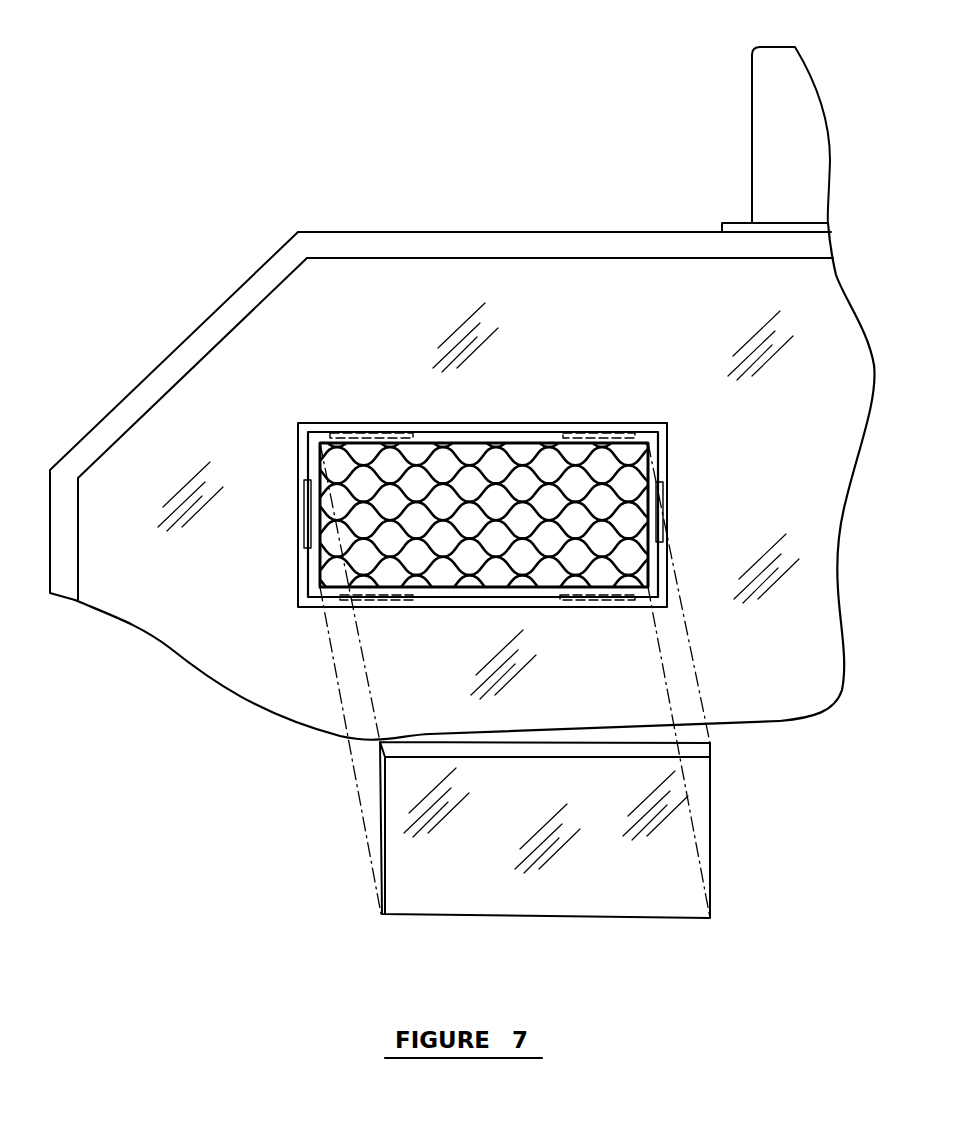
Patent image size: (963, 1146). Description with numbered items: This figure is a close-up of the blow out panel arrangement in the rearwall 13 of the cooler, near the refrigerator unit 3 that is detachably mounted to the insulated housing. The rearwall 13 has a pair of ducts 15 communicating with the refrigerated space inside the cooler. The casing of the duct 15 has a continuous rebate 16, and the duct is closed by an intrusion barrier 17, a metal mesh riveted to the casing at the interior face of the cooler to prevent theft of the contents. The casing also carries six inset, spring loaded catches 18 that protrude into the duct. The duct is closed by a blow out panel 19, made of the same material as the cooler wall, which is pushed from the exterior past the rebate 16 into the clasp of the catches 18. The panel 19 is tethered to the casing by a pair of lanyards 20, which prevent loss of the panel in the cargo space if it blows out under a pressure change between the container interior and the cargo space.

The refrigerator unit 3 is at (748, 117).
The rearwall 13 is at (248, 643).
The duct 15 is at (278, 419).
The rebate 16 is at (425, 440).
The intrusion barrier 17 is at (588, 477).
The catches 18 is at (477, 440).
The blow out panel 19 is at (412, 875).
The lanyards 20 is at (330, 518).